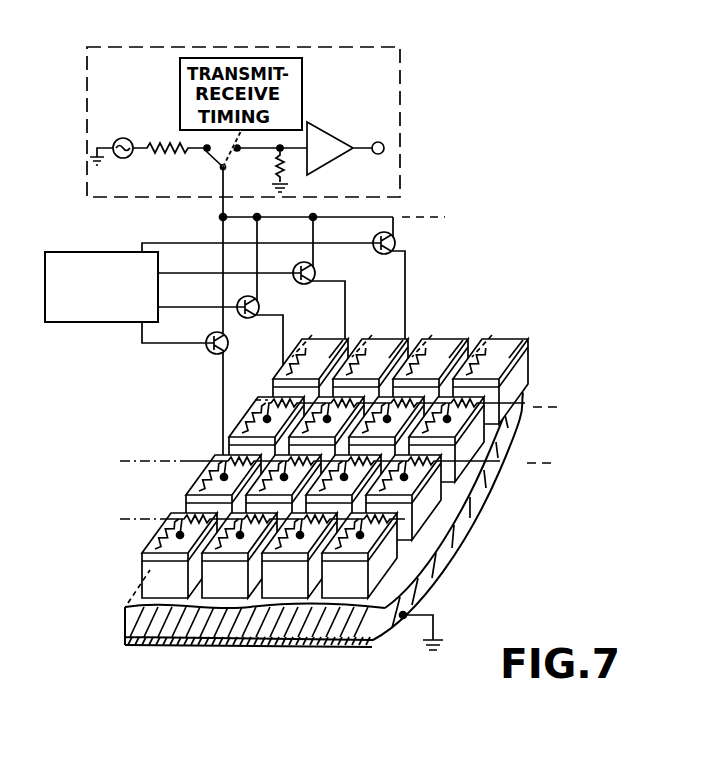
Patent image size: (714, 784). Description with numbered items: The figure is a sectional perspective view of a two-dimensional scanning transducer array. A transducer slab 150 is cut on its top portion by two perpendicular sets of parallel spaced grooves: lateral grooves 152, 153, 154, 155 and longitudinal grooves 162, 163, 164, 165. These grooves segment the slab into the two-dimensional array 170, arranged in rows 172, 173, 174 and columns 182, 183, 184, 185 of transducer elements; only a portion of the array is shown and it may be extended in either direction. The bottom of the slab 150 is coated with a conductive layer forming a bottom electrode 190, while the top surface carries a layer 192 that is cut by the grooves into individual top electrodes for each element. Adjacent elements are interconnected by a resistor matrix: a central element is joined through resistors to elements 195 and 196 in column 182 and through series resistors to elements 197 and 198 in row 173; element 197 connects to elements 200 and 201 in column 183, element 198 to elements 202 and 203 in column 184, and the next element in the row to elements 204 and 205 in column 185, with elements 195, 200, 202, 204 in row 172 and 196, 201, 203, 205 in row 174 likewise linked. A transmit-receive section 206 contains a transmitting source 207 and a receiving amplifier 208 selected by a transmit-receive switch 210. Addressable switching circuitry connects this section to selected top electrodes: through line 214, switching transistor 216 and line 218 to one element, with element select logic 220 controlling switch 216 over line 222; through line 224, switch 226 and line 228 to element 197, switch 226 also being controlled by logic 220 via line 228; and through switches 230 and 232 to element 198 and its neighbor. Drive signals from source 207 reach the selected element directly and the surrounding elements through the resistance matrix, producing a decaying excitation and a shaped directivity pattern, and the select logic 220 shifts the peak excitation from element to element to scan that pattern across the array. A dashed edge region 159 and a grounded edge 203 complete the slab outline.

The transducer slab 150 is at (128, 621).
The lateral groove 152 is at (175, 612).
The lateral groove 153 is at (225, 612).
The lateral groove 154 is at (293, 608).
The lateral groove 155 is at (333, 640).
The substrate edge 159 is at (445, 513).
The longitudinal groove 162 is at (127, 586).
The longitudinal groove 163 is at (160, 506).
The longitudinal groove 164 is at (205, 444).
The longitudinal groove 165 is at (268, 387).
The two-dimensional array 170 is at (542, 419).
The row 172 is at (140, 540).
The row 173 is at (188, 478).
The row 174 is at (215, 420).
The column 182 is at (325, 356).
The column 183 is at (380, 353).
The column 184 is at (445, 352).
The column 185 is at (505, 352).
The bottom electrode 190 is at (358, 645).
The top electrode layer 192 is at (142, 555).
The transducer element 195 is at (179, 555).
The transducer element 196 is at (245, 418).
The transducer element 197 is at (178, 504).
The transducer element 198 is at (447, 530).
The transducer element 200 is at (239, 555).
The transducer element 201 is at (247, 392).
The transducer element 202 is at (299, 555).
The transducer element 203 is at (495, 477).
The transducer element 204 is at (359, 555).
The transducer element 205 is at (400, 433).
The transmit-receive section 206 is at (395, 102).
The transmitting source 207 is at (110, 138).
The receiving amplifier 208 is at (325, 147).
The transmit-receive switch 210 is at (205, 162).
The line 214 is at (222, 315).
The switching transistor 216 is at (207, 348).
The line 218 is at (210, 452).
The element select logic 220 is at (70, 322).
The line 222 is at (140, 332).
The line 224 is at (257, 222).
The switch 226 is at (262, 303).
The line 228 is at (171, 283).
The switch 230 is at (318, 270).
The switch 232 is at (395, 240).